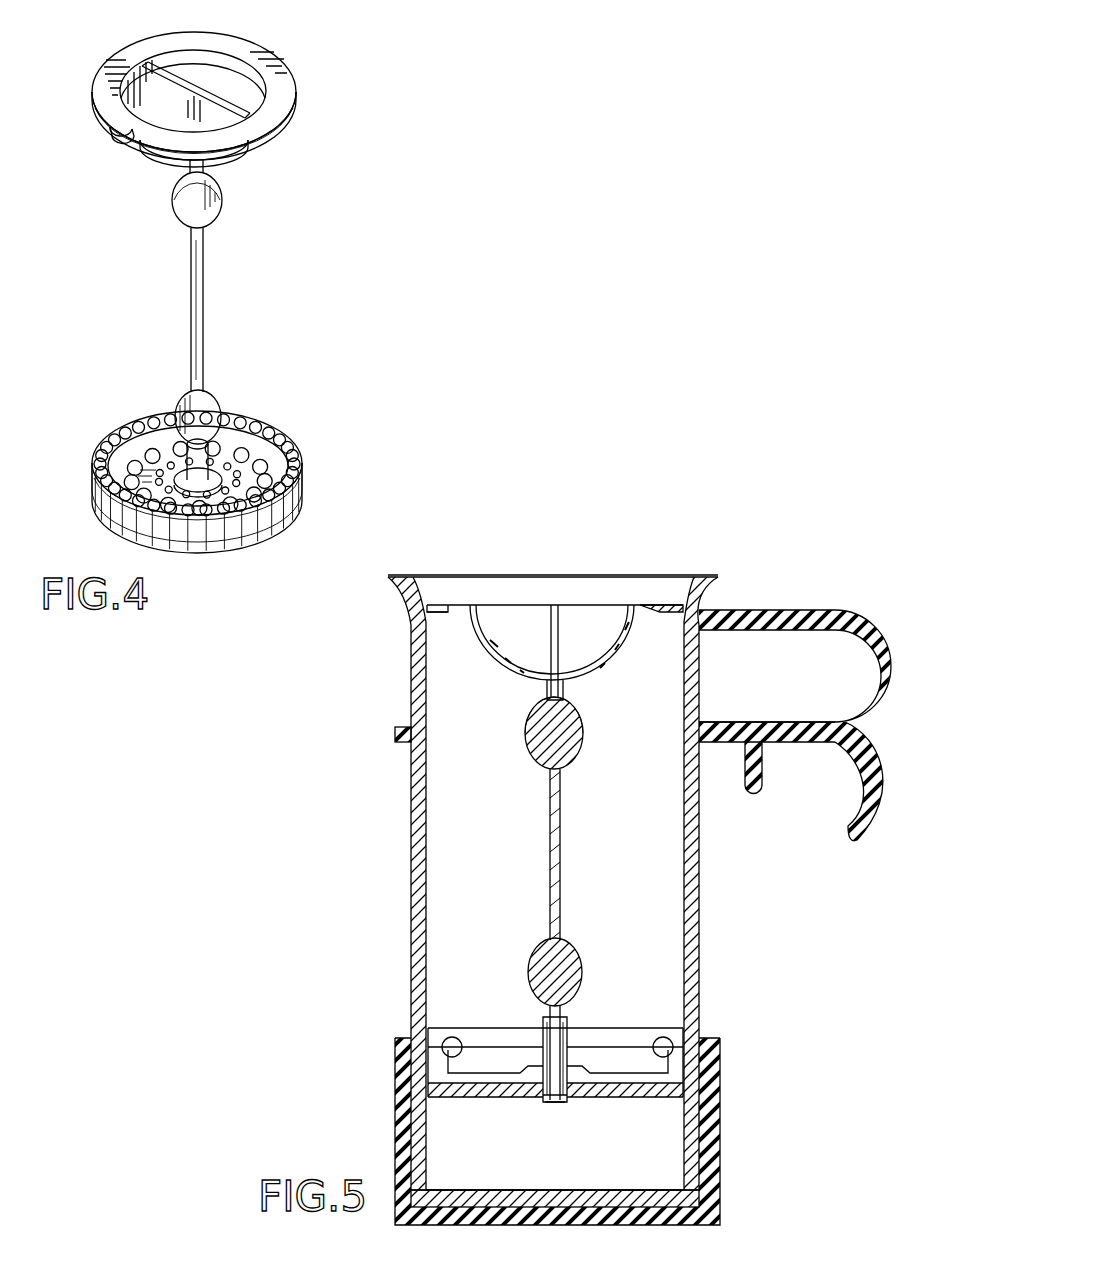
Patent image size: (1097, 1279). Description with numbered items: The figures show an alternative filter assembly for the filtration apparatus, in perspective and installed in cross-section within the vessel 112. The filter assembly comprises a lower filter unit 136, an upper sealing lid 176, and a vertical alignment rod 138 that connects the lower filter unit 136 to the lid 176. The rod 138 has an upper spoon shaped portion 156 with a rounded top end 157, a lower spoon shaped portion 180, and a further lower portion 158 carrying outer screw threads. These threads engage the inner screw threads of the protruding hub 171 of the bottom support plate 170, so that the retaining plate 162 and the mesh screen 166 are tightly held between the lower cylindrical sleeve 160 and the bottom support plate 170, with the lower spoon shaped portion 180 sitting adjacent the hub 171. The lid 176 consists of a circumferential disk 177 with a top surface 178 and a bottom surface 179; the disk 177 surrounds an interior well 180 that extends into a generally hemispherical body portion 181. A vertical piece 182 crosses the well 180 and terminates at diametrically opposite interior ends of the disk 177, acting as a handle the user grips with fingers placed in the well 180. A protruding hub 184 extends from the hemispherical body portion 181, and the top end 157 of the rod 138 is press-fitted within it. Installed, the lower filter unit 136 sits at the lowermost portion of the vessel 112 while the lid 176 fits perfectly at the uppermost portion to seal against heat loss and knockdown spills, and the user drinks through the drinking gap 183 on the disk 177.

In FIG. 5, the cylindrical shaped vessel 112 is at (712, 965).
In FIG. 4, the lower filter unit 136 is at (226, 461).
In FIG. 4, the vertical alignment rod 138 is at (198, 312).
In FIG. 5, the vertical alignment rod 138 is at (560, 885).
In FIG. 4, the upper spoon shaped portion 156 is at (187, 210).
In FIG. 5, the upper spoon shaped portion 156 is at (567, 745).
In FIG. 5, the rounded top end 157 is at (563, 688).
In FIG. 5, the further lower portion 158 is at (563, 1020).
In FIG. 4, the lower cylindrical sleeve 160 is at (197, 468).
In FIG. 5, the lower cylindrical sleeve 160 is at (555, 1062).
In FIG. 4, the retaining plate 162 is at (283, 462).
In FIG. 5, the retaining plate 162 is at (555, 1090).
In FIG. 4, the mesh screen 166 is at (312, 477).
In FIG. 4, the bottom support plate 170 is at (130, 533).
In FIG. 5, the protruding hub 171 is at (562, 1102).
In FIG. 4, the upper sealing member or lid 176 is at (246, 146).
In FIG. 4, the circumferential disk 177 is at (105, 85).
In FIG. 5, the circumferential disk 177 is at (653, 607).
In FIG. 4, the top surface 178 is at (253, 55).
In FIG. 4, the bottom surface 179 is at (267, 147).
In FIG. 5, the interior well / lower spoon shaped portion 180 is at (573, 973).
In FIG. 4, the hemispherical body portion 181 is at (206, 168).
In FIG. 5, the hemispherical body portion 181 is at (487, 647).
In FIG. 4, the vertical piece / handle 182 is at (170, 72).
In FIG. 5, the vertical piece / handle 182 is at (557, 617).
In FIG. 4, the drinking gap 183 is at (113, 135).
In FIG. 5, the drinking gap 183 is at (442, 605).
In FIG. 4, the protruding hub 184 is at (197, 168).
In FIG. 5, the protruding hub 184 is at (545, 688).